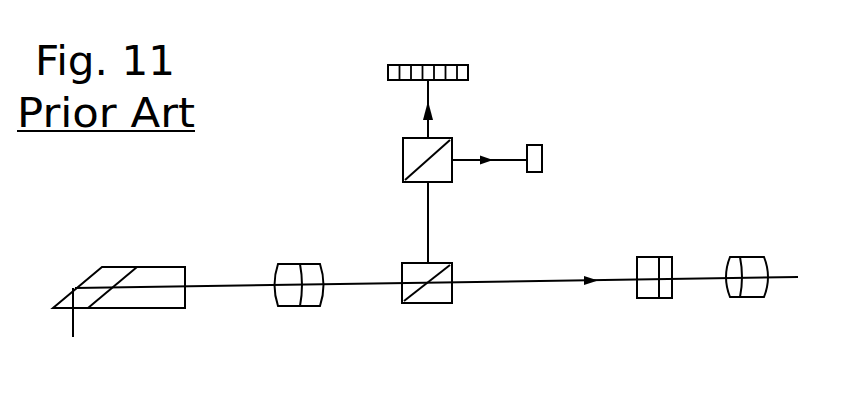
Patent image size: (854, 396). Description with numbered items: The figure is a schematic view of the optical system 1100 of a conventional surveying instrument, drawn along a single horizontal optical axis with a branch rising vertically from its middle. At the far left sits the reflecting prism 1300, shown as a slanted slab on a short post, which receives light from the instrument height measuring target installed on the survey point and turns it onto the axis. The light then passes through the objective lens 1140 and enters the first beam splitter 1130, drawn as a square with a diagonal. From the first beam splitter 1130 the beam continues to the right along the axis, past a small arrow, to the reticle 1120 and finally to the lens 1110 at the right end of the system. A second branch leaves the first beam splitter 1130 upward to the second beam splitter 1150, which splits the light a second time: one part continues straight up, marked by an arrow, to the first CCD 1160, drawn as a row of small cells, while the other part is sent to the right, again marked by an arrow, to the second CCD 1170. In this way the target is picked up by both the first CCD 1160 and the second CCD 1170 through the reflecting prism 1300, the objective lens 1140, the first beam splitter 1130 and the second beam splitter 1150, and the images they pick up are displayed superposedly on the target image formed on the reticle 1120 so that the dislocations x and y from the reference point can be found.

The optical pickup system (prior art) 1100 is at (549, 325).
The collimating lens 1110 is at (750, 257).
The reticle 1120 is at (655, 258).
The first beam splitter 1130 is at (438, 303).
The objective lens 1140 is at (295, 262).
The second beam splitter 1150 is at (442, 182).
The first CCD 1160 is at (445, 63).
The second CCD 1170 is at (542, 156).
The reflecting prism 1300 is at (145, 308).